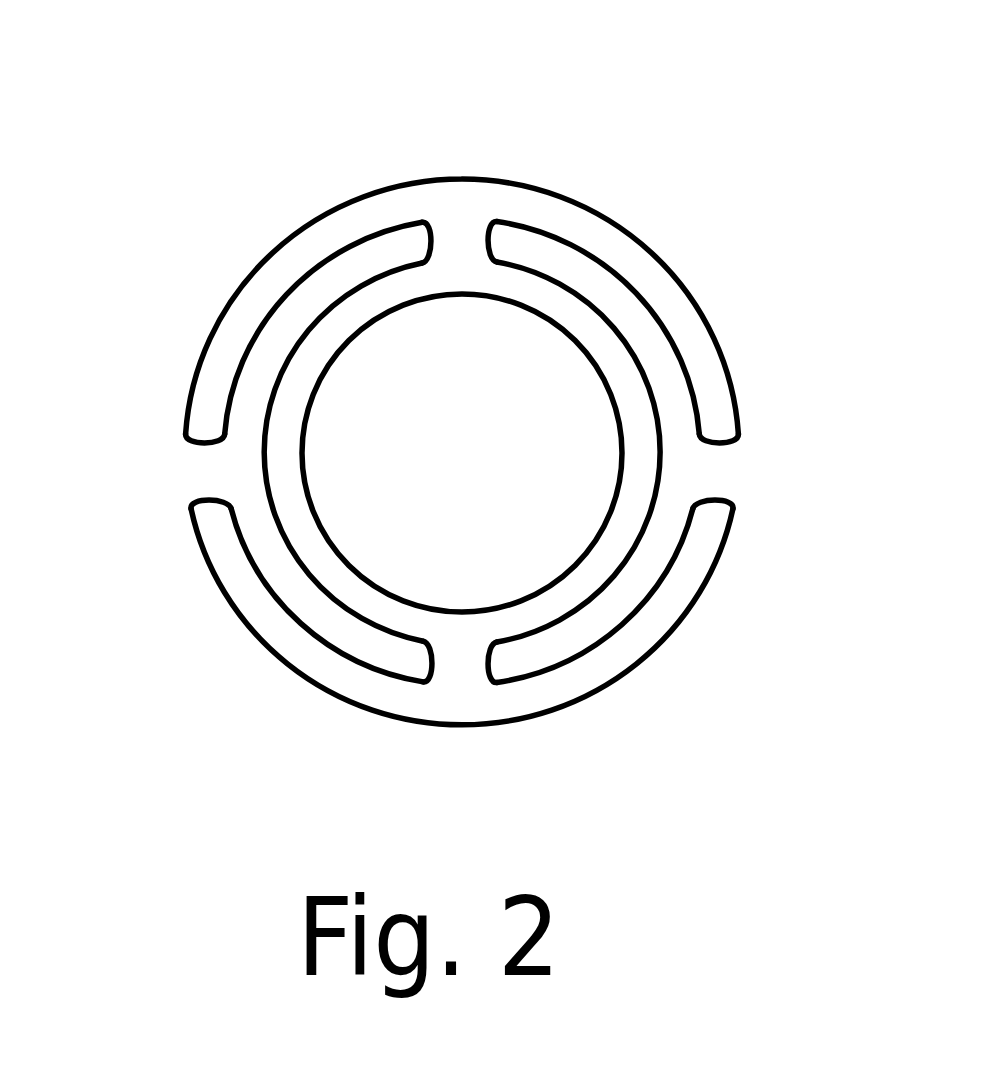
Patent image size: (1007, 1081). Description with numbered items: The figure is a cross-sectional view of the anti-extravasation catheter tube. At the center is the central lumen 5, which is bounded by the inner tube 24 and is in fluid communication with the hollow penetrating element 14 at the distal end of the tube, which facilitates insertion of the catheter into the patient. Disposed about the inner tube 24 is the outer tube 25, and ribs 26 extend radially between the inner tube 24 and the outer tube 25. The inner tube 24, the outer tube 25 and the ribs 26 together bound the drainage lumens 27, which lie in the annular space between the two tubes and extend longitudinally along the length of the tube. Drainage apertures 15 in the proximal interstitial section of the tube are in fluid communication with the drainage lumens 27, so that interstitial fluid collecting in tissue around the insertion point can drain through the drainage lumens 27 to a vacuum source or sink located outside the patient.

The central lumen 5 is at (523, 512).
The hollow penetrating element 14 is at (160, 763).
The drainage apertures 15 is at (795, 463).
The inner tube 24 is at (290, 442).
The outer tube 25 is at (367, 187).
The ribs 26 is at (458, 218).
The drainage lumens 27 is at (612, 307).